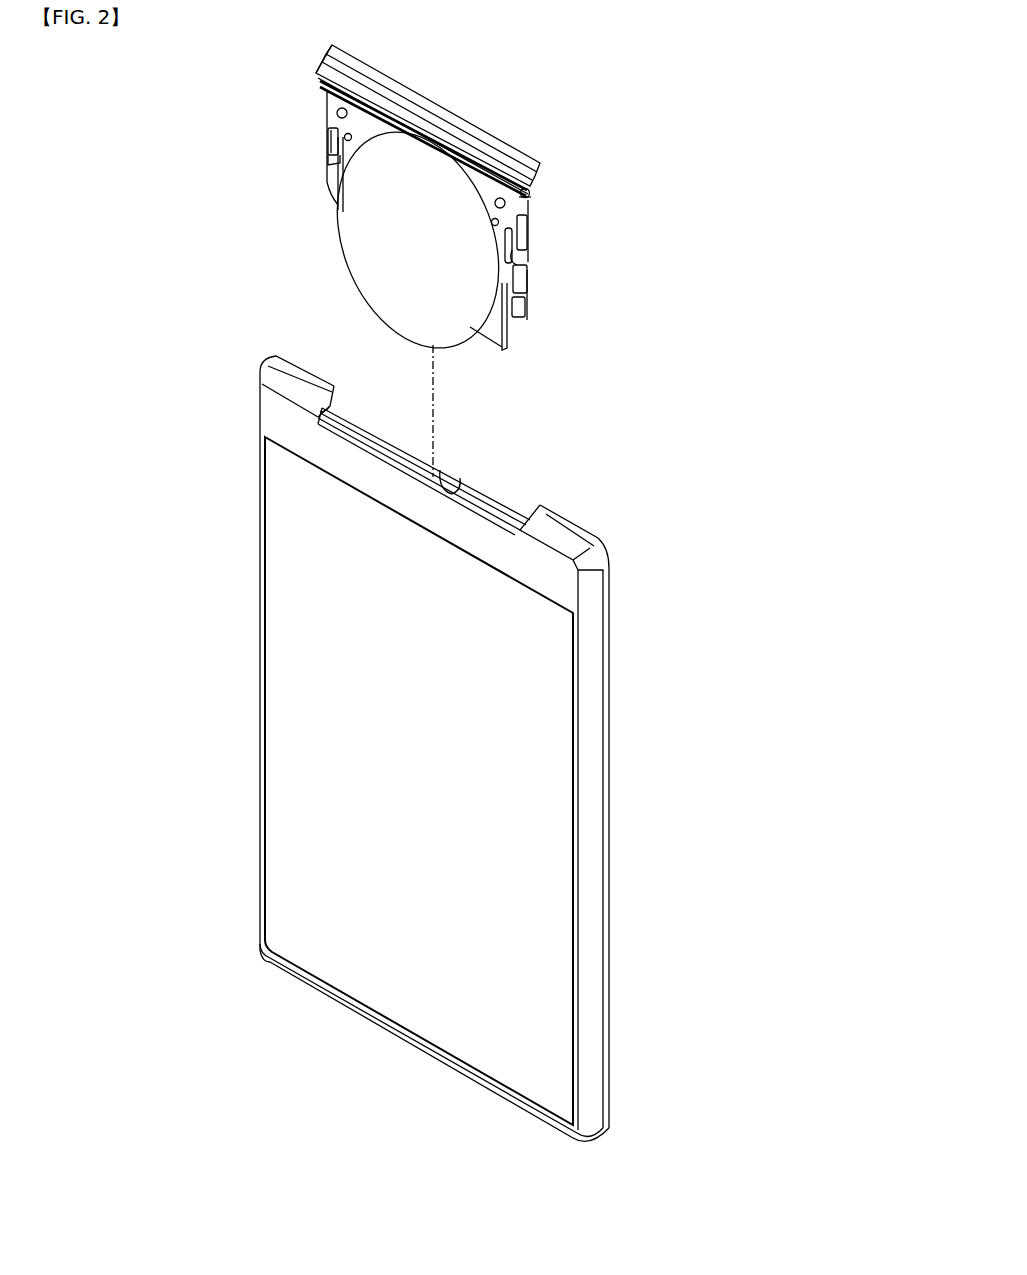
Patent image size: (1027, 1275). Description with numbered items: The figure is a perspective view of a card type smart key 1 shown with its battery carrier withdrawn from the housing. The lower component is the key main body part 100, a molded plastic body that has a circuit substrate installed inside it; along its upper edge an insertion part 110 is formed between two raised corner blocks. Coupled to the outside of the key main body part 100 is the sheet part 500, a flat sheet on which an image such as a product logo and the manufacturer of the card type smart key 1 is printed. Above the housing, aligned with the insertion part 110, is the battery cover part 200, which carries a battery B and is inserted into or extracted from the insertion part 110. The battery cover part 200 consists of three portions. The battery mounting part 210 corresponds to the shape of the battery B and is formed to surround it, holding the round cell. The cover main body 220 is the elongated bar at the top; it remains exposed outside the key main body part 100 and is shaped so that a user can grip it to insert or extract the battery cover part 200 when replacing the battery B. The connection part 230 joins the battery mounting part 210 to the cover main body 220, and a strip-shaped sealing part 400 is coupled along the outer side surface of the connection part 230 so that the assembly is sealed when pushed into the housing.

The card type smart key 1 is at (747, 121).
The key main body part 100 is at (555, 582).
The insertion part 110 is at (462, 500).
The battery cover part 200 is at (192, 50).
The battery mounting part 210 is at (330, 127).
The cover main body 220 is at (327, 63).
The connection part 230 is at (328, 110).
The sealing part 400 is at (538, 197).
The sheet part 500 is at (518, 703).
The battery B is at (467, 260).